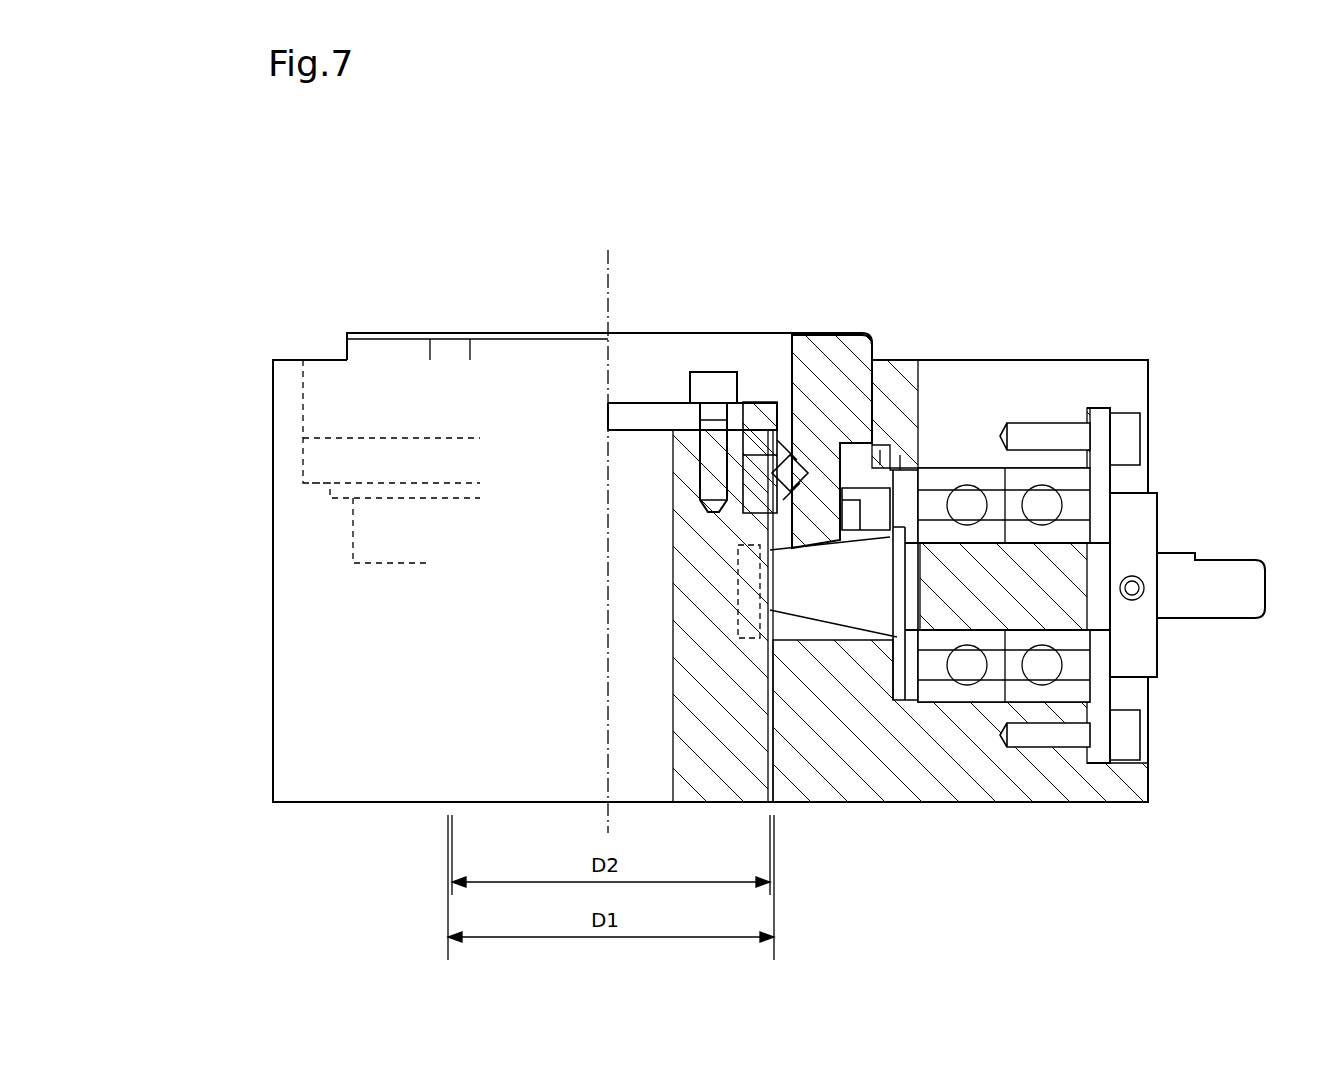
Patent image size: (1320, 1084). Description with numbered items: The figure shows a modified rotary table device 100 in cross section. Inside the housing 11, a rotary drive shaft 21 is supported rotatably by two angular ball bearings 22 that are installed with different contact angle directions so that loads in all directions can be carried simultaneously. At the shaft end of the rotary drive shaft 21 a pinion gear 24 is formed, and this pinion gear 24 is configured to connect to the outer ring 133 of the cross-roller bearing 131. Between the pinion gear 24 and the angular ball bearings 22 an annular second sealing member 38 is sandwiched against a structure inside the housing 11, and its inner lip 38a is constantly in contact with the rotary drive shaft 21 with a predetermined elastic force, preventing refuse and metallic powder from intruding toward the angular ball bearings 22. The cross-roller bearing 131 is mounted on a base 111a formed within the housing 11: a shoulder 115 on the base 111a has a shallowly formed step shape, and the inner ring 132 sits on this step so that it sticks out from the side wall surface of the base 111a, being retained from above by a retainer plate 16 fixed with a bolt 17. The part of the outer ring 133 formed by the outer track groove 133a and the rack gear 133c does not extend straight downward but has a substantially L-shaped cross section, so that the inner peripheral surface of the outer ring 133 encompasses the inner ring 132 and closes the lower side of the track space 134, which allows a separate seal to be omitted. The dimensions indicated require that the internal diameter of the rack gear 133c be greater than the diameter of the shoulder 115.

The rotary table device 100 is at (1040, 228).
The housing 11 is at (258, 654).
The base 111a is at (660, 580).
The shoulder 115 is at (765, 620).
The cross-roller bearing 131 is at (405, 328).
The inner ring 132 is at (690, 403).
The outer ring 133 is at (820, 360).
The outer track groove 133a is at (848, 488).
The rack gear 133c is at (832, 546).
The track space 134 is at (778, 440).
The retainer plate 16 is at (750, 402).
The bolt 17 is at (705, 372).
The rotary drive shaft 21 is at (1040, 580).
The angular ball bearings 22 is at (975, 703).
The pinion gear 24 is at (812, 615).
The second sealing member 38 is at (928, 498).
The inner lip 38a is at (900, 580).